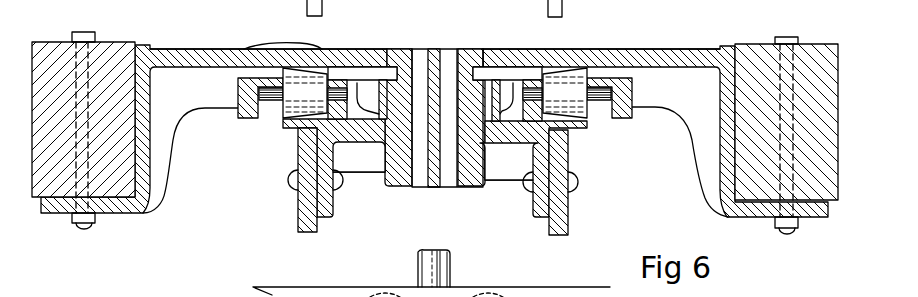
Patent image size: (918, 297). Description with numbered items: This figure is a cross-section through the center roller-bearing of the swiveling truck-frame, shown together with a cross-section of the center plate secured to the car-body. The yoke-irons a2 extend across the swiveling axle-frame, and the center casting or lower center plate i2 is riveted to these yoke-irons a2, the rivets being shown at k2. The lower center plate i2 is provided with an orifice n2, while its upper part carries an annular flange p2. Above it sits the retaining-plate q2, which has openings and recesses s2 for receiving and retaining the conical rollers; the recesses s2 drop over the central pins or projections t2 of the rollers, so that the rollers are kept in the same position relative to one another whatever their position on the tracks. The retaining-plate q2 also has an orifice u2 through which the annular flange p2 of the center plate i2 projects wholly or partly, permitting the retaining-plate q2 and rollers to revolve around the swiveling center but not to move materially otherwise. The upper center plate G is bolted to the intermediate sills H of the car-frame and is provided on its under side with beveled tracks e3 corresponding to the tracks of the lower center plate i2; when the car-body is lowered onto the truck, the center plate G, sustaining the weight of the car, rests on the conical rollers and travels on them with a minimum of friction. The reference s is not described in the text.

The intermediate sills H is at (106, 42).
The upper center plate G is at (641, 50).
The annular flange p2 is at (474, 50).
The orifice n2 is at (468, 188).
The center casting i2 is at (435, 170).
The yoke-irons a2 is at (298, 227).
The rivets k2 is at (297, 182).
The spring casing s is at (262, 113).
The recesses s2 is at (568, 150).
The orifice u2 is at (382, 80).
The retaining-plate q2 is at (362, 82).
The central pins t2 is at (265, 90).
The beveled tracks e3 is at (312, 76).